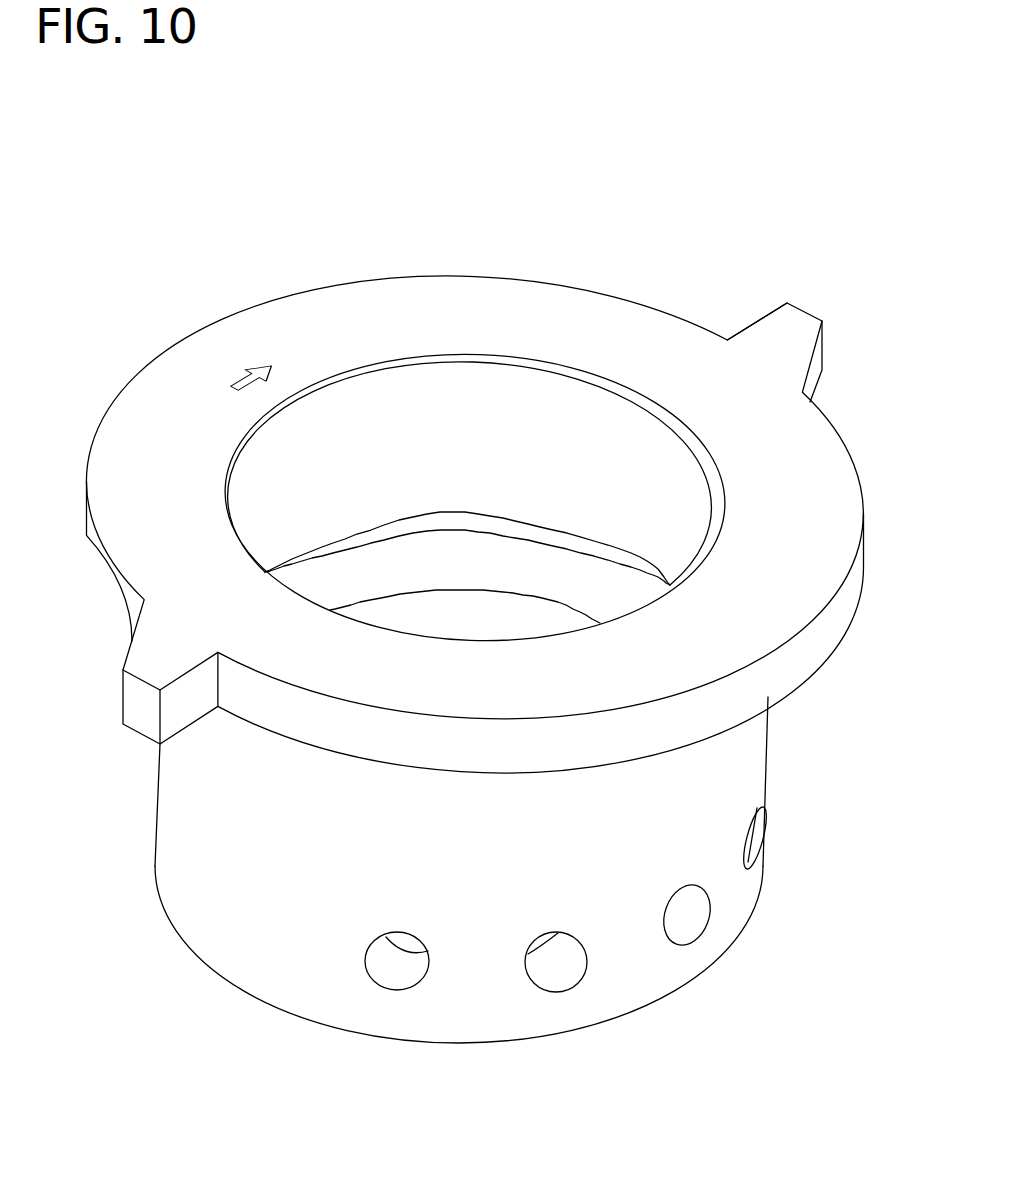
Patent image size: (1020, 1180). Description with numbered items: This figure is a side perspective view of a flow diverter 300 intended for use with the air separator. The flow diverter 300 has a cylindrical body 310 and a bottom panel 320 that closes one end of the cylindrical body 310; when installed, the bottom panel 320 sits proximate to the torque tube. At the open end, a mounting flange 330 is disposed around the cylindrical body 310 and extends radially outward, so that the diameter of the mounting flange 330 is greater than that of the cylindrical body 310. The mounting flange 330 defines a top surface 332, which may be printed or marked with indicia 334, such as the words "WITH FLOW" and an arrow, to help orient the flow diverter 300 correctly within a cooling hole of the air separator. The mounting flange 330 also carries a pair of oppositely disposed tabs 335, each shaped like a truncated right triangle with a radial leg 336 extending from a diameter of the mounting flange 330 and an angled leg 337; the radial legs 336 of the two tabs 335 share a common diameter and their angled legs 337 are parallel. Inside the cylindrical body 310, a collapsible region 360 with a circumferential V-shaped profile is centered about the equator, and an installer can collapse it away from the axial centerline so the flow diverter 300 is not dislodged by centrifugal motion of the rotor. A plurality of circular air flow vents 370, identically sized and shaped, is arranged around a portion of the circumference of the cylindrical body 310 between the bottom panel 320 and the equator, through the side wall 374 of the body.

The flow diverter 300 is at (108, 258).
The cylindrical body 310 is at (785, 700).
The bottom panel 320 is at (250, 992).
The mounting flange 330 is at (190, 353).
The top surface 332 is at (500, 295).
The indicia 334 is at (345, 295).
The tabs 335 is at (793, 333).
The radial leg 336 is at (755, 322).
The angled leg 337 is at (810, 379).
The collapsible region 360 is at (337, 578).
The air flow vents 370 is at (683, 930).
The side wall 374 is at (468, 987).